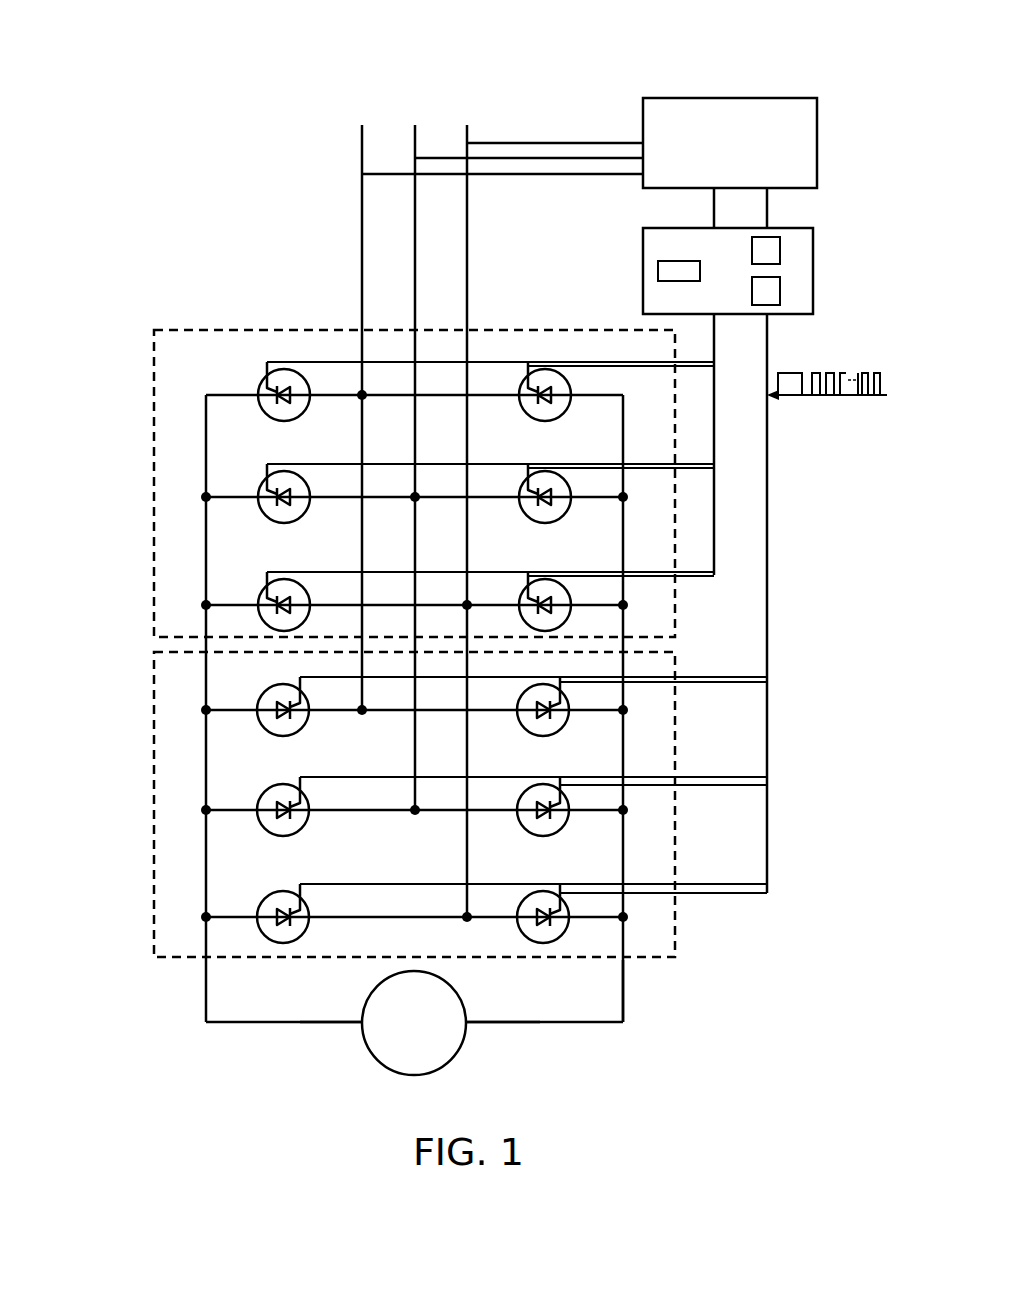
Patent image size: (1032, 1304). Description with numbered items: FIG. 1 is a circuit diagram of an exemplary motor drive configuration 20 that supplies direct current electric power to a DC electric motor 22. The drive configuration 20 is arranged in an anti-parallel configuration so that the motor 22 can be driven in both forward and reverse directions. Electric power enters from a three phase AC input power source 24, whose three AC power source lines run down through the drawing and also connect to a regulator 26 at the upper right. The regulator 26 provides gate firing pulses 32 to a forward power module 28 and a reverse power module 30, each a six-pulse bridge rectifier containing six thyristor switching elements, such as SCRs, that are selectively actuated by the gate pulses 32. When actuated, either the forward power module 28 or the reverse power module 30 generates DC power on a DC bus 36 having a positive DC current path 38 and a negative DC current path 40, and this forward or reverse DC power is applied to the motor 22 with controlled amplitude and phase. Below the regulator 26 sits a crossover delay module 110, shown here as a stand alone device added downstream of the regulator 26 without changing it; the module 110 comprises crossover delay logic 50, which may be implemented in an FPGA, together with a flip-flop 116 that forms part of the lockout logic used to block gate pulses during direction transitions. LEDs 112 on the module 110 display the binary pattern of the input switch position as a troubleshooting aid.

The motor drive configuration 20 is at (222, 278).
The DC electric motor 22 is at (455, 1055).
The three phase AC input power source 24 is at (495, 100).
The regulator 26 is at (817, 98).
The forward power module 28 is at (152, 440).
The reverse power module 30 is at (152, 742).
The gate firing pulses 32 is at (832, 395).
The DC bus 36 is at (623, 980).
The positive DC current path 38 is at (315, 1022).
The negative DC current path 40 is at (527, 1022).
The crossover delay logic 50 is at (780, 292).
The crossover delay module 110 is at (805, 228).
The LEDs 112 is at (658, 270).
The flip-flop 116 is at (780, 250).